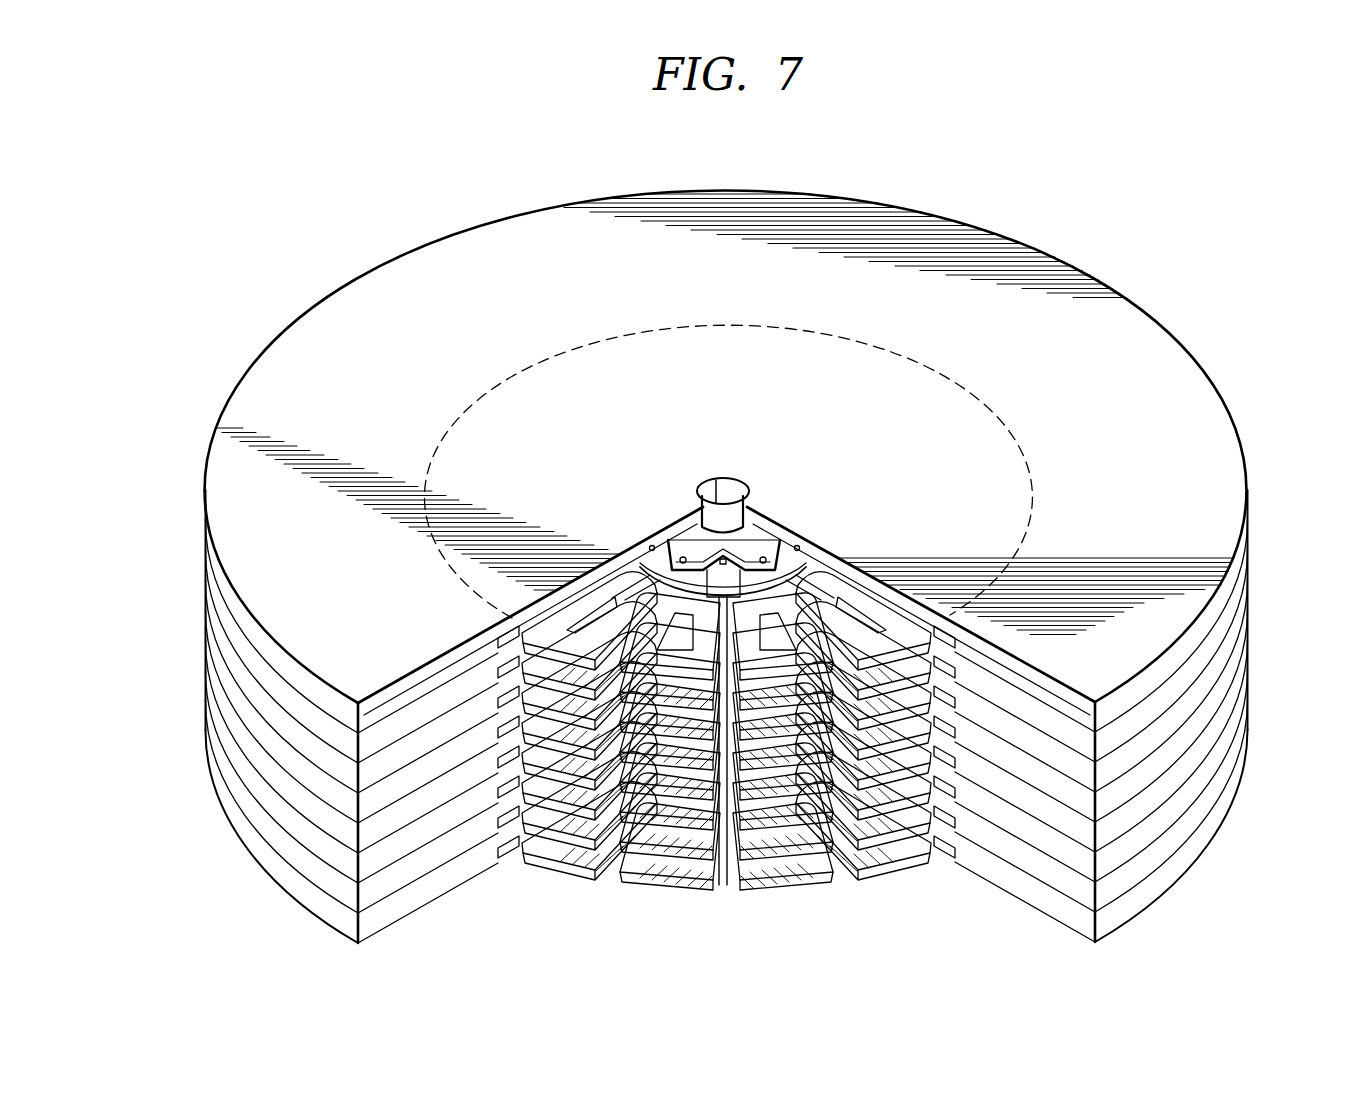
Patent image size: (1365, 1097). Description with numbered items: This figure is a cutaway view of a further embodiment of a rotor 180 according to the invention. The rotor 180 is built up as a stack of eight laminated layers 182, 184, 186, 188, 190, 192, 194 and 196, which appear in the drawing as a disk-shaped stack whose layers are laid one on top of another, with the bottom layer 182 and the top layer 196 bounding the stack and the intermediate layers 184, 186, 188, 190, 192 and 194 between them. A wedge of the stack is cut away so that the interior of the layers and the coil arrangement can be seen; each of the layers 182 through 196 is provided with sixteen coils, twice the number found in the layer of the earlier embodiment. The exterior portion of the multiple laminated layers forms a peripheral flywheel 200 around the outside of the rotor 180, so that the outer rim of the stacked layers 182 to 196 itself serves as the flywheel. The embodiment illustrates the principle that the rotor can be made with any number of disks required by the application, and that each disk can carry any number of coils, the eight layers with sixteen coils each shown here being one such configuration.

The rotor 180 is at (465, 196).
The peripheral flywheel 200 is at (360, 398).
The layer 196 is at (215, 578).
The layer 194 is at (1227, 600).
The layer 192 is at (217, 635).
The layer 190 is at (1227, 655).
The layer 188 is at (217, 693).
The layer 186 is at (1227, 712).
The layer 184 is at (1218, 772).
The layer 182 is at (327, 915).